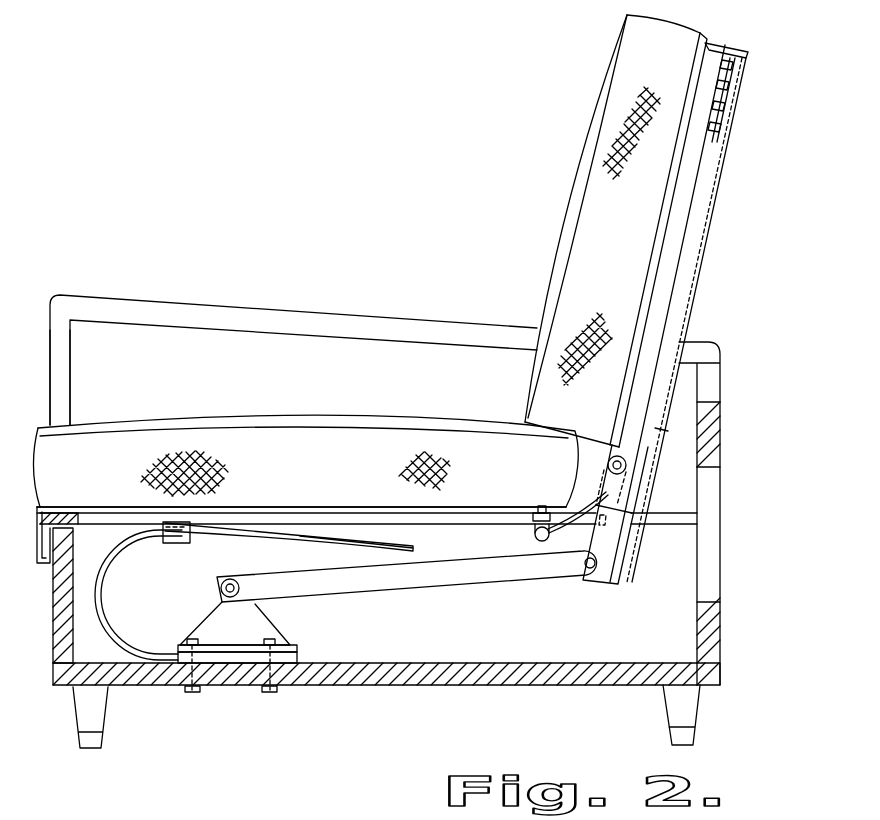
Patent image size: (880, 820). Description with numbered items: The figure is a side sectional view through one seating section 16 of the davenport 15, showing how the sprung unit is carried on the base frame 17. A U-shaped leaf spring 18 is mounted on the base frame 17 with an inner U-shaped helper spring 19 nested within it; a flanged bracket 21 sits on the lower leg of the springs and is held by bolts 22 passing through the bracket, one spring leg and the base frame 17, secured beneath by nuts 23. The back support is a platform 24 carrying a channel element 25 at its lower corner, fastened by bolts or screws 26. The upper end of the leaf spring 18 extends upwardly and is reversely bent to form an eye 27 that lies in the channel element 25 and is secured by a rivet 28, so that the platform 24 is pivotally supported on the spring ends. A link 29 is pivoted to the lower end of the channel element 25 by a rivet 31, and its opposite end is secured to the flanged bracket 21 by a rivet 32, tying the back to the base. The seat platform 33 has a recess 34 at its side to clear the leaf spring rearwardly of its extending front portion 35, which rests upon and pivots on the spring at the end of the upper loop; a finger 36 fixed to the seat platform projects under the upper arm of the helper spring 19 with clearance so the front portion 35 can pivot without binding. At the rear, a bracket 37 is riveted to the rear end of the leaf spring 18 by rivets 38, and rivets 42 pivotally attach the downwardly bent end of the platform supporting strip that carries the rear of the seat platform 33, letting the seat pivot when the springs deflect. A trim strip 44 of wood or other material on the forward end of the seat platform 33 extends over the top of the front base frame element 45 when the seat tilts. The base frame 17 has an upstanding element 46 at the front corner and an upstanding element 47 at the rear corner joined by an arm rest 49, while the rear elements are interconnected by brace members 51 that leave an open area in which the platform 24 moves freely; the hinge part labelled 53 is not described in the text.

The davenport 15 is at (403, 688).
The section 16 is at (577, 167).
The base frame 17 is at (452, 675).
The U-shaped leaf spring 18 is at (467, 527).
The helper spring 19 is at (340, 528).
The flanged bracket 21 is at (258, 628).
The bolt 22 is at (283, 688).
The nut 23 is at (266, 694).
The platform 24 is at (682, 310).
The channel element 25 is at (607, 540).
The bolt or screw 26 is at (632, 493).
The eye 27 is at (661, 429).
The rivet 28 is at (628, 464).
The link 29 is at (455, 577).
The rivet 31 is at (590, 572).
The rivet 32 is at (238, 584).
The seat platform 33 is at (118, 517).
The recess 34 is at (224, 516).
The extending front portion 35 is at (112, 570).
The finger 36 is at (178, 543).
The bracket 37 is at (534, 536).
The rivet 38 is at (547, 506).
The rivet 42 is at (537, 541).
The trim strip 44 is at (40, 562).
The base frame element 45 is at (57, 637).
The upstanding element 46 is at (70, 373).
The upstanding element 47 is at (710, 381).
The arm rest 49 is at (280, 312).
The brace member 51 is at (713, 617).
The hinge 53 is at (726, 88).